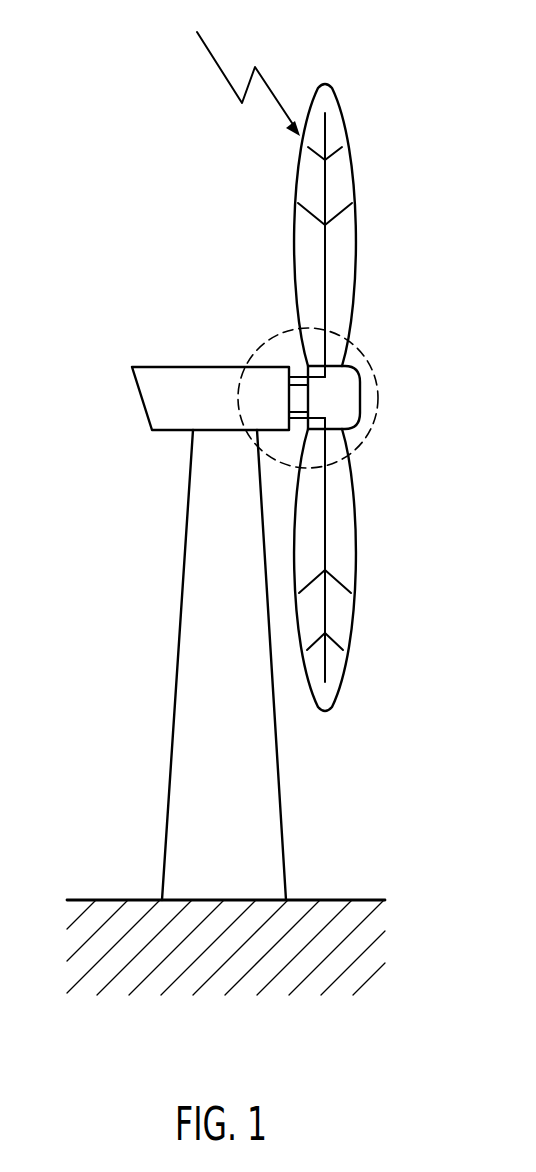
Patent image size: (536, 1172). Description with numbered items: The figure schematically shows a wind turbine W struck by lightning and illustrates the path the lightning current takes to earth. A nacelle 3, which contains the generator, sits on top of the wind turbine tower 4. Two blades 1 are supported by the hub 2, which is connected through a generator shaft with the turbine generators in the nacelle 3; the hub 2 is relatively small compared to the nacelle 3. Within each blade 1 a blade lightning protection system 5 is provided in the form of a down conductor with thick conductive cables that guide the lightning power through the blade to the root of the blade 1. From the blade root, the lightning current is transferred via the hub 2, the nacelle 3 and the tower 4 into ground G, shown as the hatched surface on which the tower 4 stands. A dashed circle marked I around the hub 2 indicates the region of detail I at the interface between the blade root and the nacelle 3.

The blades 1 is at (347, 250).
The hub 2 is at (355, 380).
The nacelle 3 is at (152, 403).
The wind turbine tower 4 is at (192, 642).
The blade lightning protection system 5 is at (333, 213).
The ground G is at (372, 955).
The wind turbine W is at (81, 278).
The detail region I is at (258, 350).